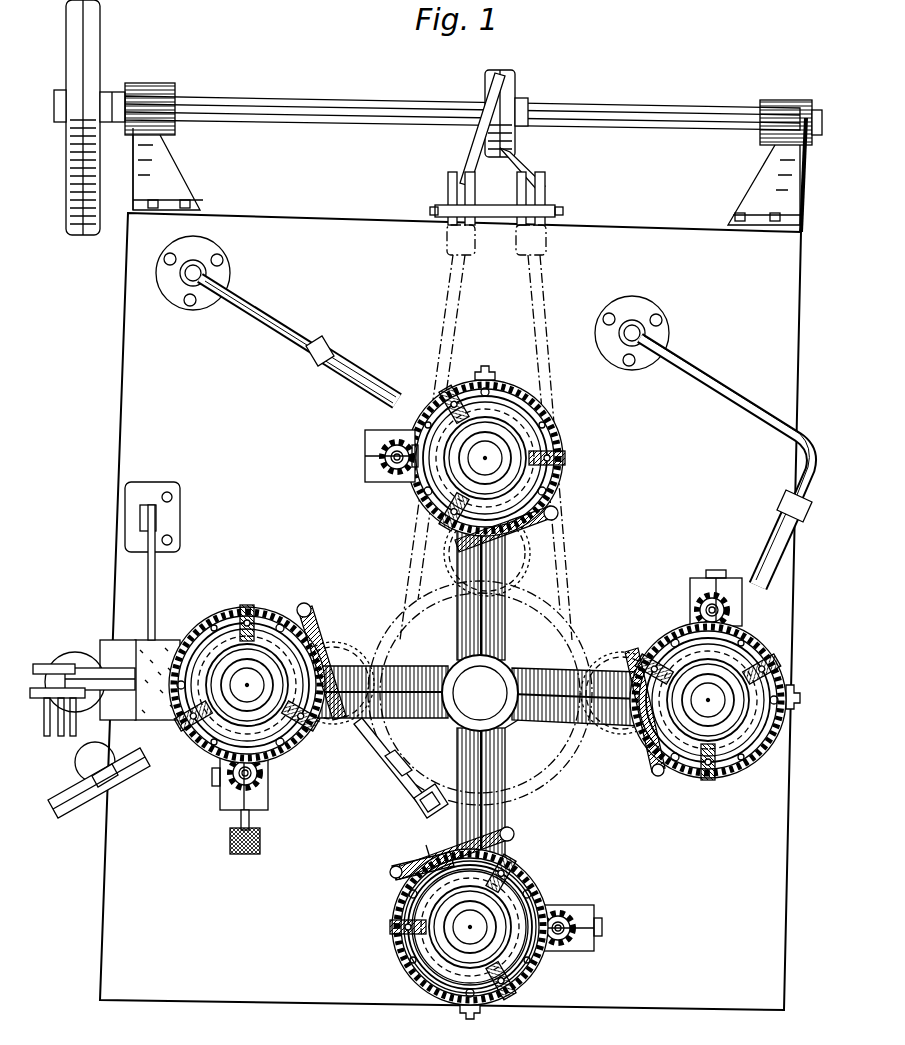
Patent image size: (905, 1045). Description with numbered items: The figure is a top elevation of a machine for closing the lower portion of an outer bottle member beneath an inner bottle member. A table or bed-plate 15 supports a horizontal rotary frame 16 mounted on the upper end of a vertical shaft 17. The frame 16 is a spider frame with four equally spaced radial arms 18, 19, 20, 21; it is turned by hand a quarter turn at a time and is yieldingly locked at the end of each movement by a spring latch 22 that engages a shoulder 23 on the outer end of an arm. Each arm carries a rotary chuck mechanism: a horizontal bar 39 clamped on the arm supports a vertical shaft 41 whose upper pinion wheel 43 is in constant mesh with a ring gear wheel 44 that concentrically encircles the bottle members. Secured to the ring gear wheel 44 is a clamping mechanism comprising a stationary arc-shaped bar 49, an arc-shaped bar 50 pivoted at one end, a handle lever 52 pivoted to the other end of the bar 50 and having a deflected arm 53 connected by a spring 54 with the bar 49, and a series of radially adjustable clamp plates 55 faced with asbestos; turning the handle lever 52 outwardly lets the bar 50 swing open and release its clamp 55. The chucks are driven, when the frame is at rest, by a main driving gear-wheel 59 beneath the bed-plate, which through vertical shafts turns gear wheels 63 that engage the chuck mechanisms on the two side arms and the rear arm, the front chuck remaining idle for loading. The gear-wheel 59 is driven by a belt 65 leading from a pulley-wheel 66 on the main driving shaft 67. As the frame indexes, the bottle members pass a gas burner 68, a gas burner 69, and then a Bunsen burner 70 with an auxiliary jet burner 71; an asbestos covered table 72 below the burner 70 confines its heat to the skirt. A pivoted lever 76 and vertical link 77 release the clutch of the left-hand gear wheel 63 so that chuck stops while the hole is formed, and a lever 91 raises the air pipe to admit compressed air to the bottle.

The table or bed-plate 15 is at (453, 564).
The horizontal rotary frame 16 is at (520, 740).
The vertical shaft 17 is at (480, 693).
The radial arm 18 is at (490, 815).
The radial arm 19 is at (555, 680).
The radial arm 20 is at (478, 598).
The radial arm 21 is at (383, 706).
The spring latch 22 is at (178, 640).
The shoulder 23 is at (486, 378).
The horizontal bar 39 is at (368, 480).
The vertical shaft 41 is at (397, 470).
The pinion wheel 43 is at (382, 458).
The ring gear wheel 44 is at (430, 420).
The stationary arc-shaped bar 49 is at (528, 890).
The pivoted arc-shaped bar 50 is at (405, 960).
The handle lever 52 is at (340, 722).
The deflected arm 53 is at (392, 872).
The spring 54 is at (430, 841).
The clamp bars or plates 55 is at (535, 865).
The main driving gear-wheel 59 is at (652, 772).
The gear wheel 63 is at (530, 553).
The belt 65 is at (540, 313).
The pulley-wheel 66 is at (518, 149).
The main driving shaft 67 is at (705, 118).
The gas burner 68 is at (703, 441).
The gas burner 69 is at (276, 328).
The Bunsen burner 70 is at (100, 655).
The auxiliary burner 71 is at (120, 772).
The asbestos covered table 72 is at (140, 642).
The pivoted lever 76 is at (395, 782).
The vertical link 77 is at (418, 815).
The lever 91 is at (260, 840).